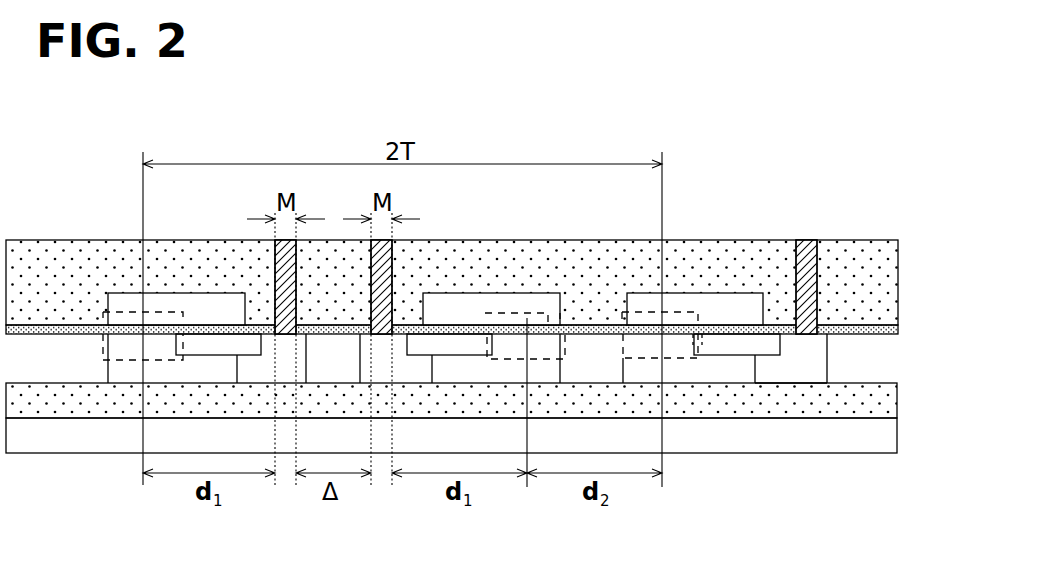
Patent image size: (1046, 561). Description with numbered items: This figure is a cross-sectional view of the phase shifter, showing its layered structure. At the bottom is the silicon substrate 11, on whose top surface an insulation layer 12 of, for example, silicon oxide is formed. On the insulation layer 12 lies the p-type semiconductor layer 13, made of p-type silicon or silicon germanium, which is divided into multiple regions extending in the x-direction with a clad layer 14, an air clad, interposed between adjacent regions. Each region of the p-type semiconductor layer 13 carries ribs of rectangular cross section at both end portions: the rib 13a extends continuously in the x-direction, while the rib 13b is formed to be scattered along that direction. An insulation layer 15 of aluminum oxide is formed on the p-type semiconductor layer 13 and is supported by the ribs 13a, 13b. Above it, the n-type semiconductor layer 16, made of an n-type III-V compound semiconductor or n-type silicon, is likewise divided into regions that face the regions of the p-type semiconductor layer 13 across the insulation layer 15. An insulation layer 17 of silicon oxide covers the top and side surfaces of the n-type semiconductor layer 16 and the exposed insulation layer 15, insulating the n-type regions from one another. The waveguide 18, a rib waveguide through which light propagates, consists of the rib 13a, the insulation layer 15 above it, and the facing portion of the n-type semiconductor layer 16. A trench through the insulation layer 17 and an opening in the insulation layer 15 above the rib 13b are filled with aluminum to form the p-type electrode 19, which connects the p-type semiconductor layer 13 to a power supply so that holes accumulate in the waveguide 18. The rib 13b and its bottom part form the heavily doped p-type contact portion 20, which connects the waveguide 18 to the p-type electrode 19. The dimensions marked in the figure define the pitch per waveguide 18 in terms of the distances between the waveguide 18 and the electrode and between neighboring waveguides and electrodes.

The substrate 11 is at (883, 437).
The insulation layer 12 is at (883, 397).
The p-type semiconductor layer 13 is at (738, 370).
The rib 13a is at (672, 348).
The rib 13b is at (815, 342).
The clad layer 14 is at (722, 343).
The insulation layer 15 is at (897, 328).
The n-type semiconductor layer 16 is at (738, 298).
The insulation layer 17 is at (888, 279).
The waveguide 18 is at (677, 345).
The p-type electrode 19 is at (803, 253).
The p-type contact portion 20 is at (800, 370).